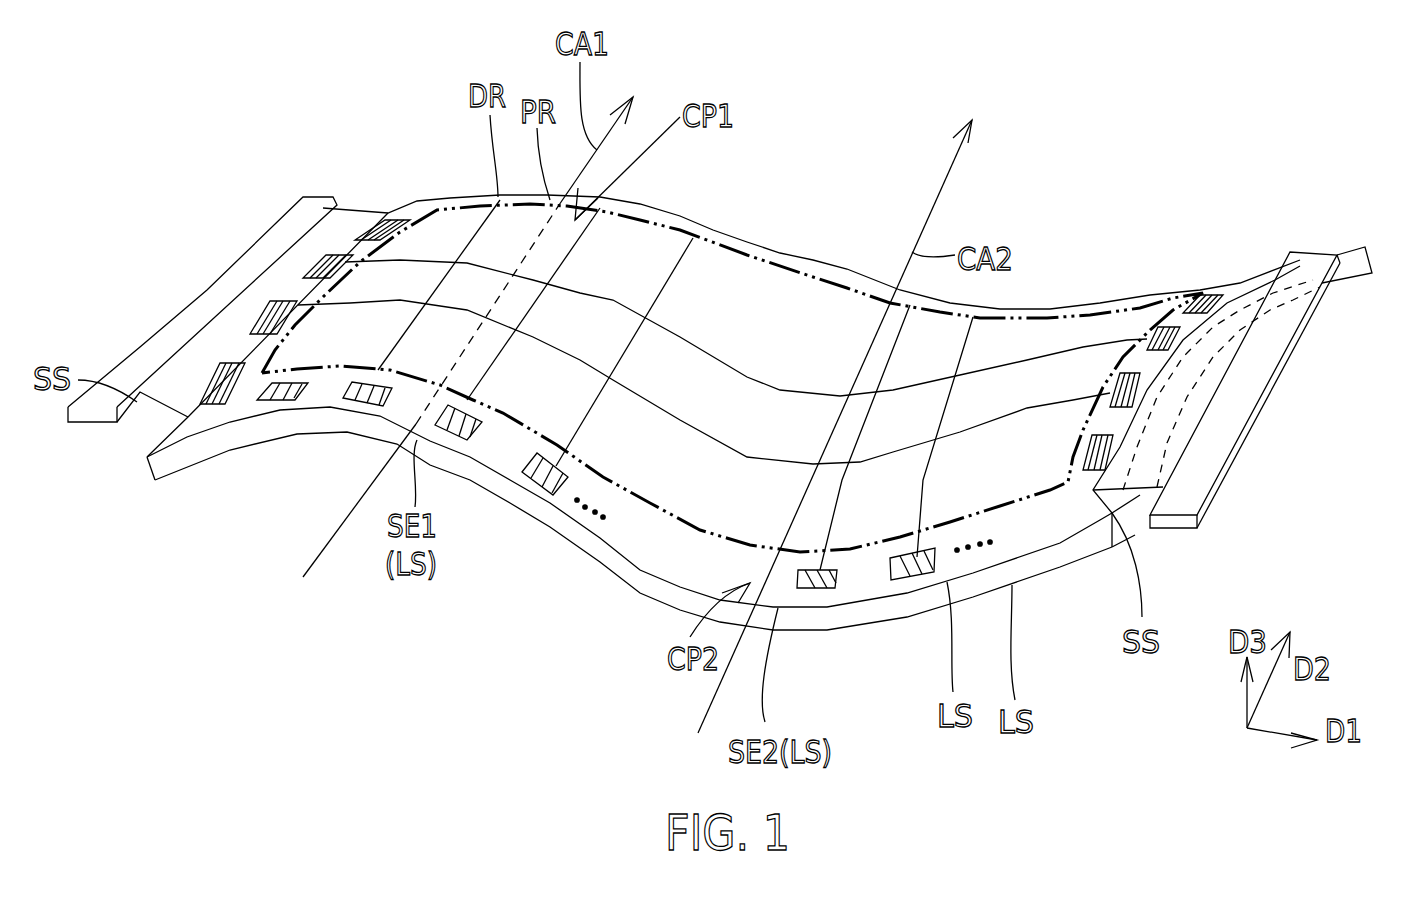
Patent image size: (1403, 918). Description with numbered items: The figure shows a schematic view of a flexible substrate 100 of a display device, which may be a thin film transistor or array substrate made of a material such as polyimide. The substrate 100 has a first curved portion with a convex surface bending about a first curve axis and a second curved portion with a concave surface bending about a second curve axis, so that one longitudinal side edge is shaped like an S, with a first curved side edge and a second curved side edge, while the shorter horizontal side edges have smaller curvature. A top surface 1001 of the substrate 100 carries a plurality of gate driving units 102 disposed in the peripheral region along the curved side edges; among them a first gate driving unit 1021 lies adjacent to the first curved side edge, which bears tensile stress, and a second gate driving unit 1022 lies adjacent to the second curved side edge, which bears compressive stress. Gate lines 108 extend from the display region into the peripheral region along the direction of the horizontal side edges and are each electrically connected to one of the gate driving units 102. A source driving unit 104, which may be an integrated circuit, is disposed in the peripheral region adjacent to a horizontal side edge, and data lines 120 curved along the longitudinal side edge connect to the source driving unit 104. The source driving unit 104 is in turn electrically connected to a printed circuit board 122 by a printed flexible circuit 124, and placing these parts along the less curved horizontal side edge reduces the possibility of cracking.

The substrate 100 is at (1363, 247).
The top surface 1001 is at (827, 277).
The gate driving unit 102 is at (272, 400).
The first gate driving unit 1021 is at (362, 396).
The second gate driving unit 1022 is at (907, 558).
The source driving unit 104 is at (397, 211).
The gate line 108 is at (315, 328).
The data line 120 is at (1028, 407).
The printed circuit board 122 is at (223, 277).
The printed flexible circuit 124 is at (298, 245).